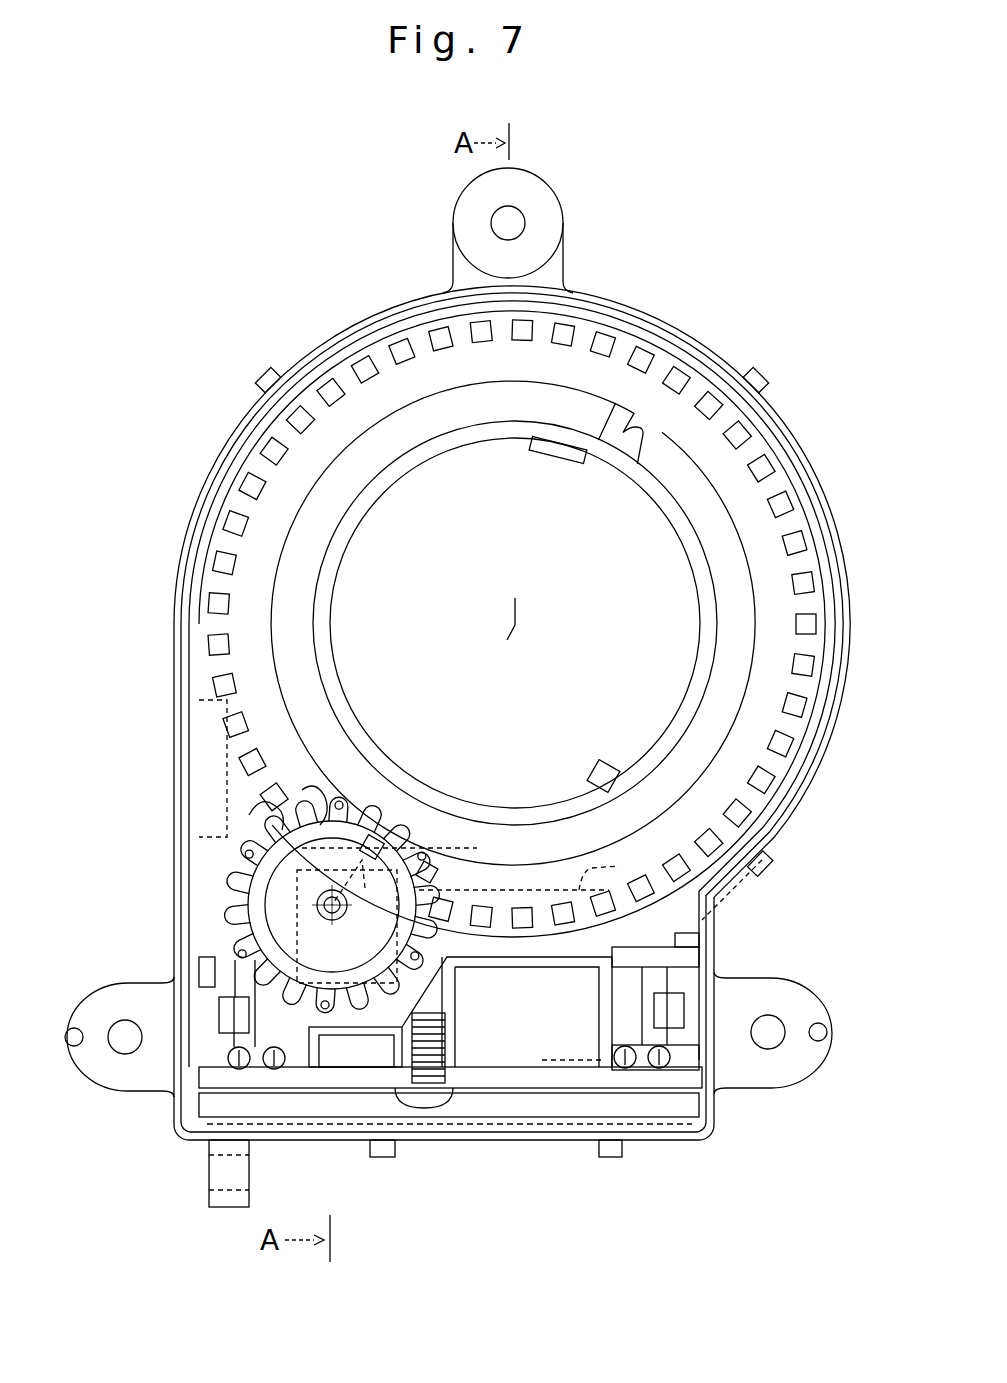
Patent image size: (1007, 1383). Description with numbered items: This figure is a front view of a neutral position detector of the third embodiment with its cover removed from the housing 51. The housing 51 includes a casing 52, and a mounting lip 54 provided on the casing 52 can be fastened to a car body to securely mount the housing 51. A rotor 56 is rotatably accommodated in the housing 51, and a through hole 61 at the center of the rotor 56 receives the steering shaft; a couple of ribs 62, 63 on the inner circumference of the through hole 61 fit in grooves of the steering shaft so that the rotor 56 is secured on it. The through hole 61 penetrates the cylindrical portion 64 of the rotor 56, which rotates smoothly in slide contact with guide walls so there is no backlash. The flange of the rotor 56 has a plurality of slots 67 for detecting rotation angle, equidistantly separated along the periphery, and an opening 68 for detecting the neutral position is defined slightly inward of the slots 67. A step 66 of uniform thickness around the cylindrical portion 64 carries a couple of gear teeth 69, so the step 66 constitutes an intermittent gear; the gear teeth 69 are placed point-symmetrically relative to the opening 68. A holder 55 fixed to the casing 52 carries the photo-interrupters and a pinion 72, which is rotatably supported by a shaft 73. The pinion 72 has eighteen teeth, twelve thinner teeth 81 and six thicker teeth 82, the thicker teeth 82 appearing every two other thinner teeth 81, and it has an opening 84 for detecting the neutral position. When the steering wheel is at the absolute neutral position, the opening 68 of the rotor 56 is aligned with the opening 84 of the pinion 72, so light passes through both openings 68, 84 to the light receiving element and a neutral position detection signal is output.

The housing 51 is at (678, 238).
The casing 52 is at (777, 410).
The mounting lip 54 is at (543, 185).
The holder 55 is at (479, 864).
The rotor 56 is at (795, 518).
The through hole 61 is at (330, 659).
The rib 62 is at (601, 764).
The rib 63 is at (537, 451).
The cylindrical portion 64 is at (400, 470).
The step 66 is at (720, 740).
The slots 67 is at (440, 343).
The opening 68 is at (450, 850).
The gear teeth 69 is at (650, 458).
The pinion 72 is at (257, 899).
The shaft 73 is at (332, 910).
The thinner teeth 81 is at (352, 793).
The thicker teeth 82 is at (320, 798).
The opening 84 is at (363, 890).